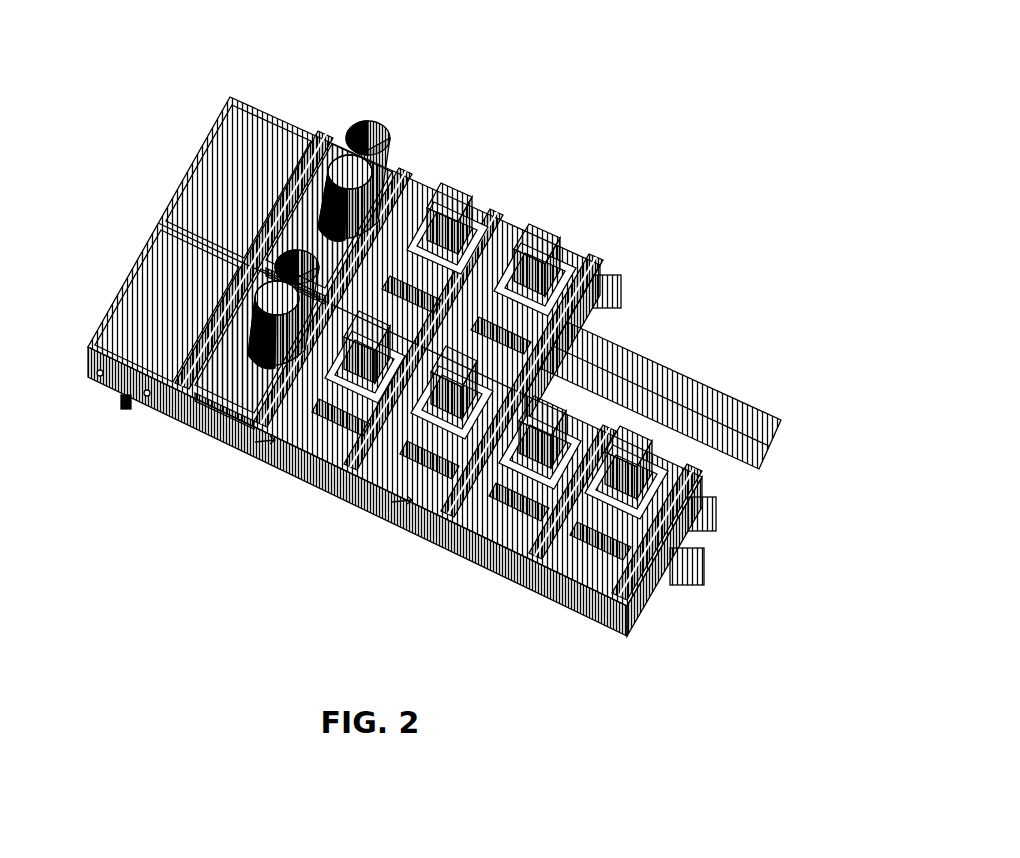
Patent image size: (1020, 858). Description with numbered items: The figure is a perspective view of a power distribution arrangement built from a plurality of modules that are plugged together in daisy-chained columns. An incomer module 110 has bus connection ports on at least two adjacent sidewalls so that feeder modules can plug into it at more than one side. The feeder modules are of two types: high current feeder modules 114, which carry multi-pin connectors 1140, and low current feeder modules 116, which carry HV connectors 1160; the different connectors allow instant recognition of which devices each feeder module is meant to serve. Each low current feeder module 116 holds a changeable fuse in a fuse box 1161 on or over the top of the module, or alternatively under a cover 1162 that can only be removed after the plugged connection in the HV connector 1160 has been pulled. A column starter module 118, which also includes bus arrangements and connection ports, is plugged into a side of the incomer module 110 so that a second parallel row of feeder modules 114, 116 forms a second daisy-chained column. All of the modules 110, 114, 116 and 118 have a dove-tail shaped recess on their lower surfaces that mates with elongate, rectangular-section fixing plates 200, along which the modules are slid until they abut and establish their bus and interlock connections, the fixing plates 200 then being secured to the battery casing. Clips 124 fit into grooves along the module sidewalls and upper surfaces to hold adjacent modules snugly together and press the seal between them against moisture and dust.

The incomer module 110 is at (135, 348).
The high current feeder module 114 is at (390, 175).
The low current feeder module 116 is at (576, 258).
The column starter module 118 is at (243, 120).
The clip 124 is at (555, 330).
The fixing plate 200 is at (700, 555).
The multi-pin connector 1140 is at (385, 128).
The HV connector 1160 is at (557, 227).
The fuse box 1161 is at (510, 500).
The cover 1162 is at (580, 557).